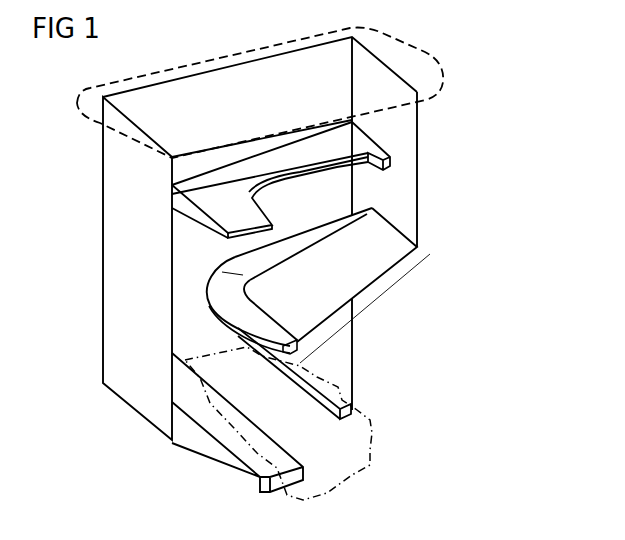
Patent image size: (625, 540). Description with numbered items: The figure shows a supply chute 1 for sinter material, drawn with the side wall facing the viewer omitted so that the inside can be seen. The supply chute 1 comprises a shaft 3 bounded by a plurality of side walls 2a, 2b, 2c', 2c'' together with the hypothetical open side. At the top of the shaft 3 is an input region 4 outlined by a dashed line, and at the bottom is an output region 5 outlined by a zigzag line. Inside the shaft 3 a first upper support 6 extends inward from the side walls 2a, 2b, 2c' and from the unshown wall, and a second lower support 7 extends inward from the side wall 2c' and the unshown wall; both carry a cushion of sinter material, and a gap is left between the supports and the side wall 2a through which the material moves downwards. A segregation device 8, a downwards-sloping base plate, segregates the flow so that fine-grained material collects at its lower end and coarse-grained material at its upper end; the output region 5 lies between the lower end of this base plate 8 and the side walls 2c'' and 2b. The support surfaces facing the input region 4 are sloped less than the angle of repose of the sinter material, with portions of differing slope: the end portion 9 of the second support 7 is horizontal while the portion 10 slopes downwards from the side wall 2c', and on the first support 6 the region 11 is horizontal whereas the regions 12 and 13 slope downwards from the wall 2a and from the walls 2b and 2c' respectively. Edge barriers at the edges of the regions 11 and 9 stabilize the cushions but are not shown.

The supply chute 1 is at (497, 127).
The side wall 2a is at (104, 262).
The side wall 2b is at (222, 79).
The side wall 2c' is at (410, 142).
The side wall 2c'' is at (365, 332).
The shaft 3 is at (53, 92).
The input region 4 is at (428, 68).
The output region 5 is at (372, 452).
The first upper support 6 is at (398, 160).
The second lower support 7 is at (352, 311).
The segregation device 8 is at (202, 445).
The portion of the second support 9 is at (220, 288).
The portion of the second support 10 is at (310, 267).
The region of the first support 11 is at (215, 193).
The region of the first support 12 is at (270, 152).
The region of the first support 13 is at (178, 205).